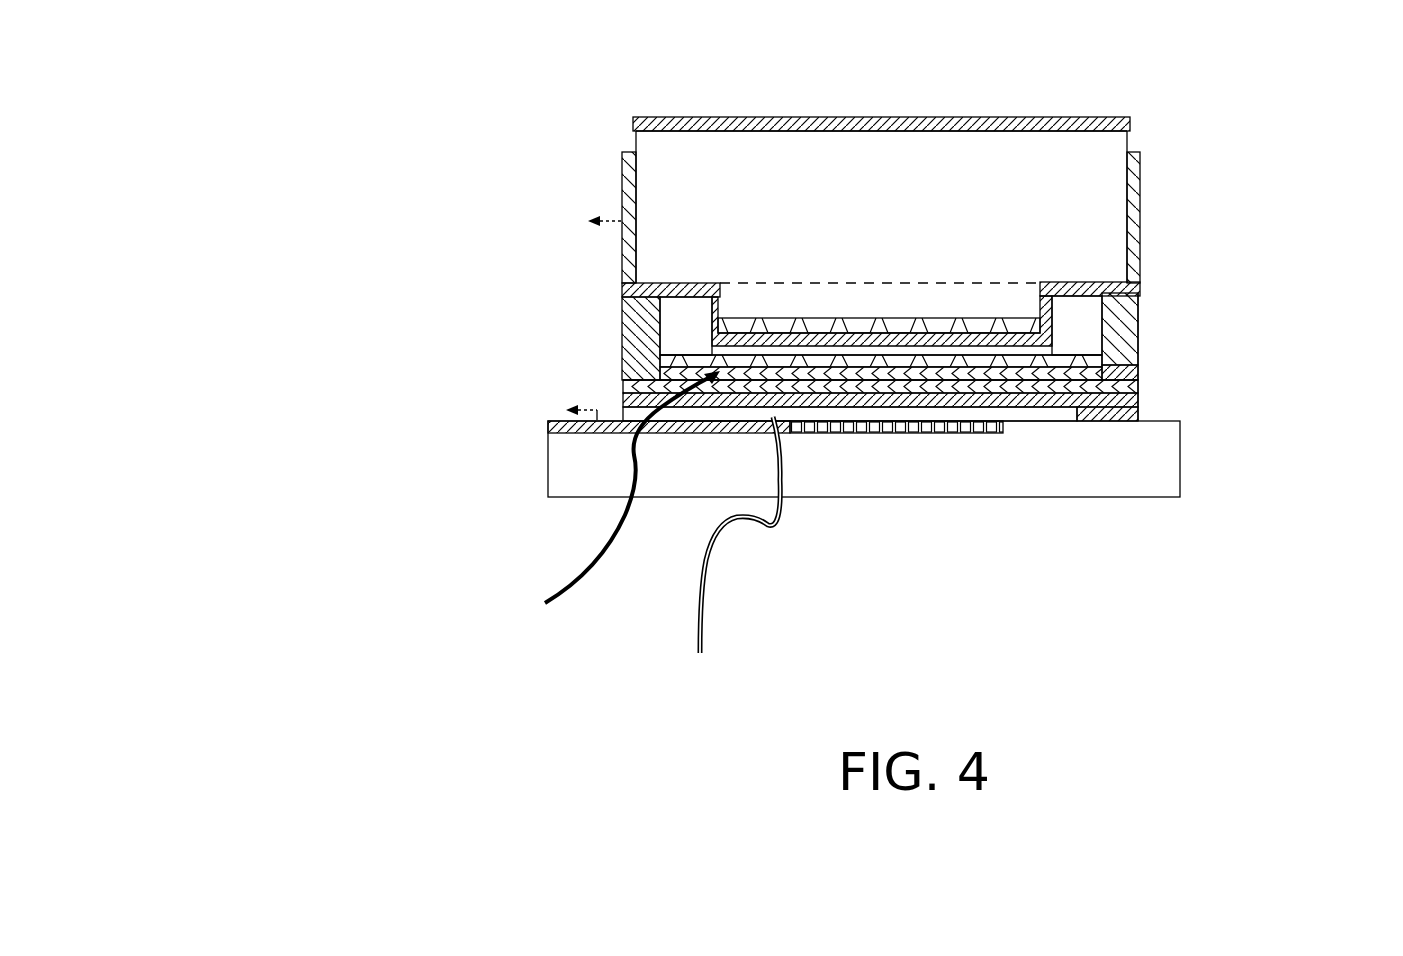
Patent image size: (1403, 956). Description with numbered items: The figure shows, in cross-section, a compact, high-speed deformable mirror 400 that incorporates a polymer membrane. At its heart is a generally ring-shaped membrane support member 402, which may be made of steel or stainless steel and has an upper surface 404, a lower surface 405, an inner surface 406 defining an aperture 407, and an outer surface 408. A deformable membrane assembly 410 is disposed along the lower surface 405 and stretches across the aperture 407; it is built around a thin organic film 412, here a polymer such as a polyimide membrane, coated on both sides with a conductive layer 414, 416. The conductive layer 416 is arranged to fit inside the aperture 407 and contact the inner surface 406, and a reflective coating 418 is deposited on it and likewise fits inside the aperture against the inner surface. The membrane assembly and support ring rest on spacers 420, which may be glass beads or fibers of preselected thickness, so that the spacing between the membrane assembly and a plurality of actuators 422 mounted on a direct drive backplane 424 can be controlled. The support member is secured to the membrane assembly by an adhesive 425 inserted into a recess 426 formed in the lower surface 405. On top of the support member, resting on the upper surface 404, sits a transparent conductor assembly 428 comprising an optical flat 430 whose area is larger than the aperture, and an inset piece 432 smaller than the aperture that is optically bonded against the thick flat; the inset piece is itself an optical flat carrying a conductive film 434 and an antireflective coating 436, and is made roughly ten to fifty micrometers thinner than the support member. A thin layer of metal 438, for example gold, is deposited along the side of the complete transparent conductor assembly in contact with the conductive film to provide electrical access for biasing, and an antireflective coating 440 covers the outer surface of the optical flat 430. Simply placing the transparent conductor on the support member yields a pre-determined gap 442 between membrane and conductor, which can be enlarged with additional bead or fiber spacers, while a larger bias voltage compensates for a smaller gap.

The deformable mirror 400 is at (372, 278).
The membrane support member 402 is at (660, 318).
The upper surface 404 is at (1135, 284).
The lower surface 405 is at (1108, 372).
The inner surface 406 is at (1100, 295).
The aperture 407 is at (690, 330).
The outer surface 408 is at (1140, 313).
The deformable membrane assembly 410 is at (623, 504).
The organic film 412 is at (623, 397).
The conductive layer 414 is at (650, 372).
The conductive layer 416 is at (672, 363).
The reflective coating 418 is at (668, 370).
The spacers 420 is at (680, 417).
The actuators 422 is at (987, 433).
The direct drive backplane 424 is at (1167, 460).
The adhesive 425 is at (1115, 367).
The recess 426 is at (670, 380).
The transparent conductor assembly 428 is at (1158, 160).
The optical flat 430 is at (708, 195).
The inset piece 432 is at (843, 303).
The conductive film 434 is at (906, 320).
The antireflective coating 436 is at (940, 335).
The layer of metal 438 is at (1133, 205).
The antireflective coating 440 is at (680, 118).
The gap 442 is at (806, 350).